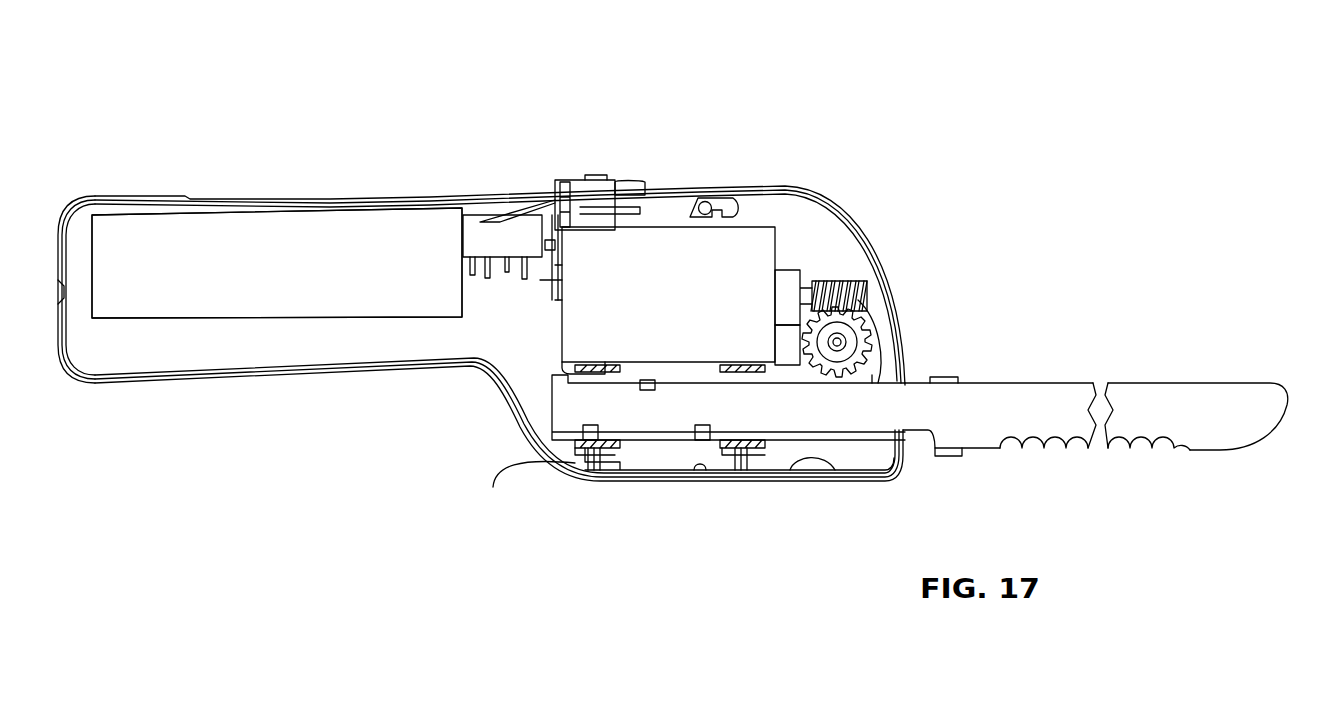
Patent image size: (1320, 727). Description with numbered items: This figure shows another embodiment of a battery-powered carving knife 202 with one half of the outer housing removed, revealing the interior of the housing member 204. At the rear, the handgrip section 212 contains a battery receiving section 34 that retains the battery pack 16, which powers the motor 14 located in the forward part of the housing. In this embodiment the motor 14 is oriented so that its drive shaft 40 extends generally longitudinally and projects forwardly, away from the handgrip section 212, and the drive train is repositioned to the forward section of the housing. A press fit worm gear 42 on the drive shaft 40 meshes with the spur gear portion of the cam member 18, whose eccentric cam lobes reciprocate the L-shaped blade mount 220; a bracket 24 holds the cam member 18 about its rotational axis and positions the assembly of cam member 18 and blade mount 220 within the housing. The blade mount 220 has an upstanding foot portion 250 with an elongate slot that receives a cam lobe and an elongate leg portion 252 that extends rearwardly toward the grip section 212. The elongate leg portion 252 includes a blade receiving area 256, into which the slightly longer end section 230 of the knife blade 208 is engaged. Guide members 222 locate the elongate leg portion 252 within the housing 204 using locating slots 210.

The battery-powered carving knife 202 is at (520, 266).
The housing member 204 is at (879, 175).
The handgrip section 212 is at (277, 197).
The battery receiving section 34 is at (205, 340).
The battery pack 16 is at (362, 250).
The motor 14 is at (675, 238).
The bracket 24 is at (770, 342).
The drive shaft 40 is at (805, 287).
The worm gear 42 is at (835, 282).
The cam member 18 is at (872, 330).
The foot portion 250 is at (880, 342).
The end section 230 is at (806, 415).
The reciprocating blade mount 220 is at (888, 371).
The knife blade 208 is at (1137, 383).
The locating slots 210 is at (808, 518).
The guide members 222 is at (617, 483).
The elongate leg portion 252 is at (668, 443).
The blade receiving area 256 is at (697, 477).